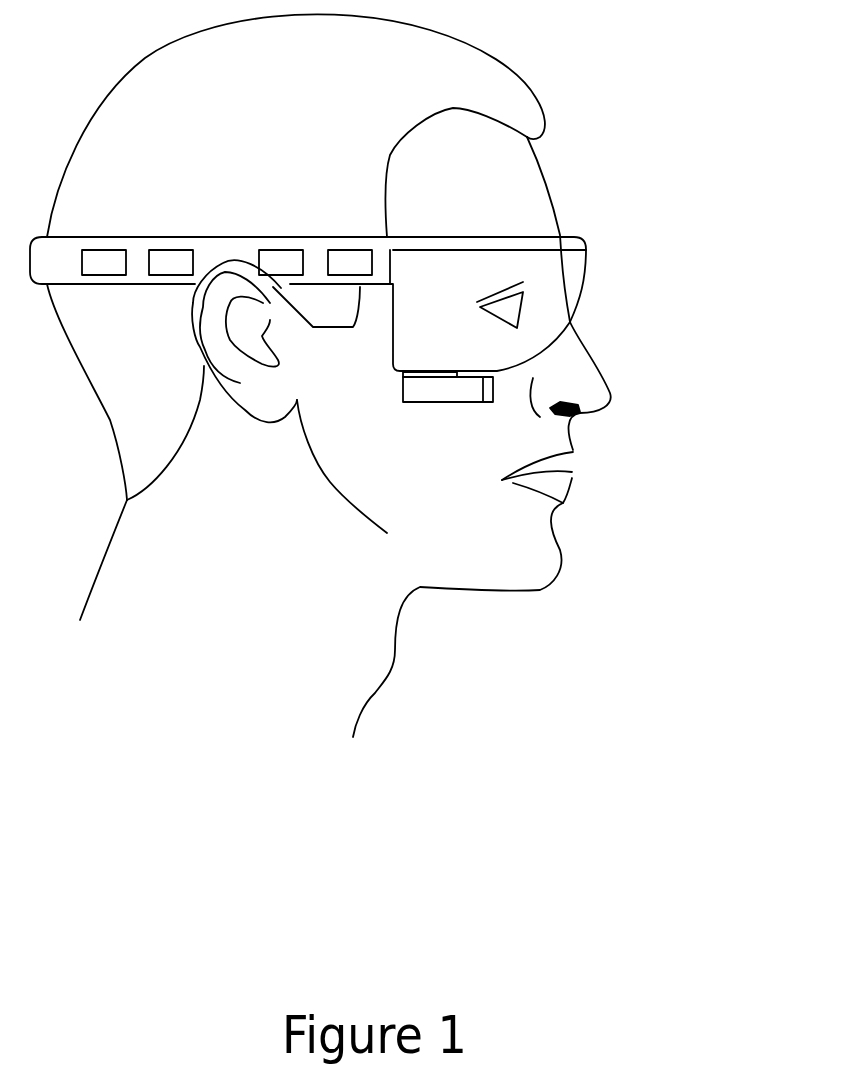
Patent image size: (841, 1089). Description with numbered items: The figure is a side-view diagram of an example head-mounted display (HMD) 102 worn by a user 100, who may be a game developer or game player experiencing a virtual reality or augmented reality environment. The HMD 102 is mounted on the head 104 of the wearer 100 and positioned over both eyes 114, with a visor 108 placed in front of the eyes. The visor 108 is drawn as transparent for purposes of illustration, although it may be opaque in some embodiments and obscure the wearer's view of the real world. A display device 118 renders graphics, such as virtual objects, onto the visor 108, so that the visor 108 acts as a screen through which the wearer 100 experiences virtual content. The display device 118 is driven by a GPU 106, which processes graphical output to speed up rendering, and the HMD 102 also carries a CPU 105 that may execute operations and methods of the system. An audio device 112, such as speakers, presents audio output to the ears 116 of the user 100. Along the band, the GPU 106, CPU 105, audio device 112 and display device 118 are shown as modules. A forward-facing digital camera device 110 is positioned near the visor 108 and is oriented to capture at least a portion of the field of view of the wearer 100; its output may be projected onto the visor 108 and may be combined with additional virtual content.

The user 100 is at (527, 645).
The head-mounted display (HMD) 102 is at (625, 238).
The head 104 is at (128, 80).
The central processing unit (CPU) 105 is at (173, 250).
The GPU 106 is at (284, 250).
The visor 108 is at (580, 287).
The digital camera device 110 is at (447, 392).
The audio device 112 is at (106, 250).
The eyes 114 is at (500, 320).
The ears 116 is at (250, 397).
The display device 118 is at (351, 250).